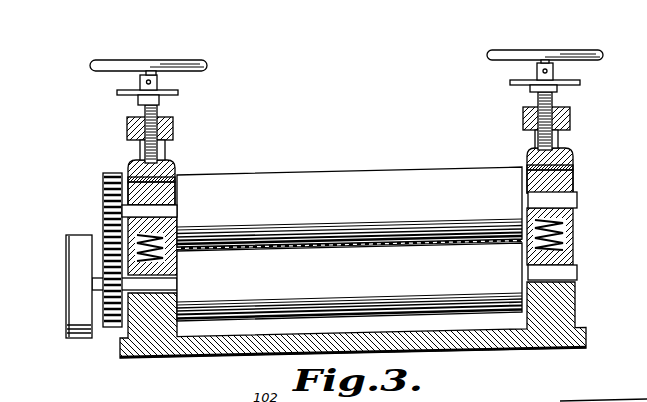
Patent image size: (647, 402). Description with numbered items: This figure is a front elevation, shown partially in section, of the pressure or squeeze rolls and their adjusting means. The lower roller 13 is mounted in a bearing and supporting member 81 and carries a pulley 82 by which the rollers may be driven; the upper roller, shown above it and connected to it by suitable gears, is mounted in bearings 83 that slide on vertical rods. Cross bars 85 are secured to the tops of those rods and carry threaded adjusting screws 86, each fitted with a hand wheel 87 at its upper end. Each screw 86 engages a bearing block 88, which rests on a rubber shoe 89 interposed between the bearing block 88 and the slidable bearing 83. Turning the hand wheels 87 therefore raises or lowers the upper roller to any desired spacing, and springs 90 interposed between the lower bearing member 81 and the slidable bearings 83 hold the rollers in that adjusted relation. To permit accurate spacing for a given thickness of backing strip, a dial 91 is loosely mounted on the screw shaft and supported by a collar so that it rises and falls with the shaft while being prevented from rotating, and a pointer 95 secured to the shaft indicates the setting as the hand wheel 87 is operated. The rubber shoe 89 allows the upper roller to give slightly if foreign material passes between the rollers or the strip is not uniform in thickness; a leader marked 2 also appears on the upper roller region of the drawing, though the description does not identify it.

The upper roller 2 is at (348, 237).
The pressure or squeeze roller 13 is at (440, 162).
The bearing and supporting member 81 is at (515, 349).
The pulley 82 is at (80, 340).
The bearing 83 is at (177, 177).
The cross bar 85 is at (568, 113).
The threaded adjusting screw 86 is at (145, 108).
The hand wheel 87 is at (197, 61).
The bearing block 88 is at (138, 153).
The rubber shoe 89 is at (130, 181).
The spring 90 is at (137, 248).
The dial 91 is at (118, 93).
The pointer 95 is at (140, 81).